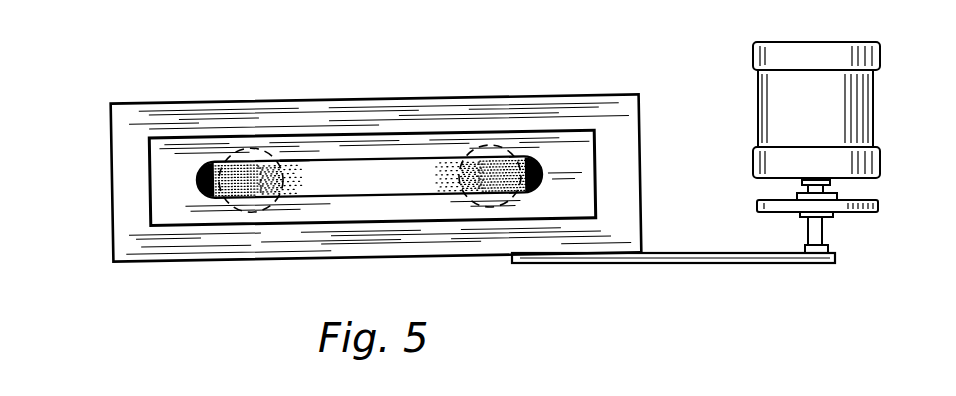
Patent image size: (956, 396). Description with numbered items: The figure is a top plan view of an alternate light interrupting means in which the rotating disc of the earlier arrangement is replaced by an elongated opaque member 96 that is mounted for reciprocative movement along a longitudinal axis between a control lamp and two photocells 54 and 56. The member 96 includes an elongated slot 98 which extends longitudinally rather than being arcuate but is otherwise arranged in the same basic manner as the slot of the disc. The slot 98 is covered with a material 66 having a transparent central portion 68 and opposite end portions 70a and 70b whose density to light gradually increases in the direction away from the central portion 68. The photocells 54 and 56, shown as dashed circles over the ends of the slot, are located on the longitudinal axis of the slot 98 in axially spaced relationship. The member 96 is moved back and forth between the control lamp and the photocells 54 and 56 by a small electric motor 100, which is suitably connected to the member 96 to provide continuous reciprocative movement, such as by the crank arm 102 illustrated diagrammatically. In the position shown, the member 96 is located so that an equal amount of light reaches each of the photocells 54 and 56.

The photocell 54 is at (237, 148).
The photocell 56 is at (487, 147).
The material 66 is at (563, 155).
The transparent central portion 68 is at (372, 183).
The end portion 70a is at (285, 194).
The end portion 70b is at (452, 186).
The elongated opaque member 96 is at (125, 188).
The elongated slot 98 is at (293, 158).
The electric motor 100 is at (806, 48).
The crank arm 102 is at (683, 256).